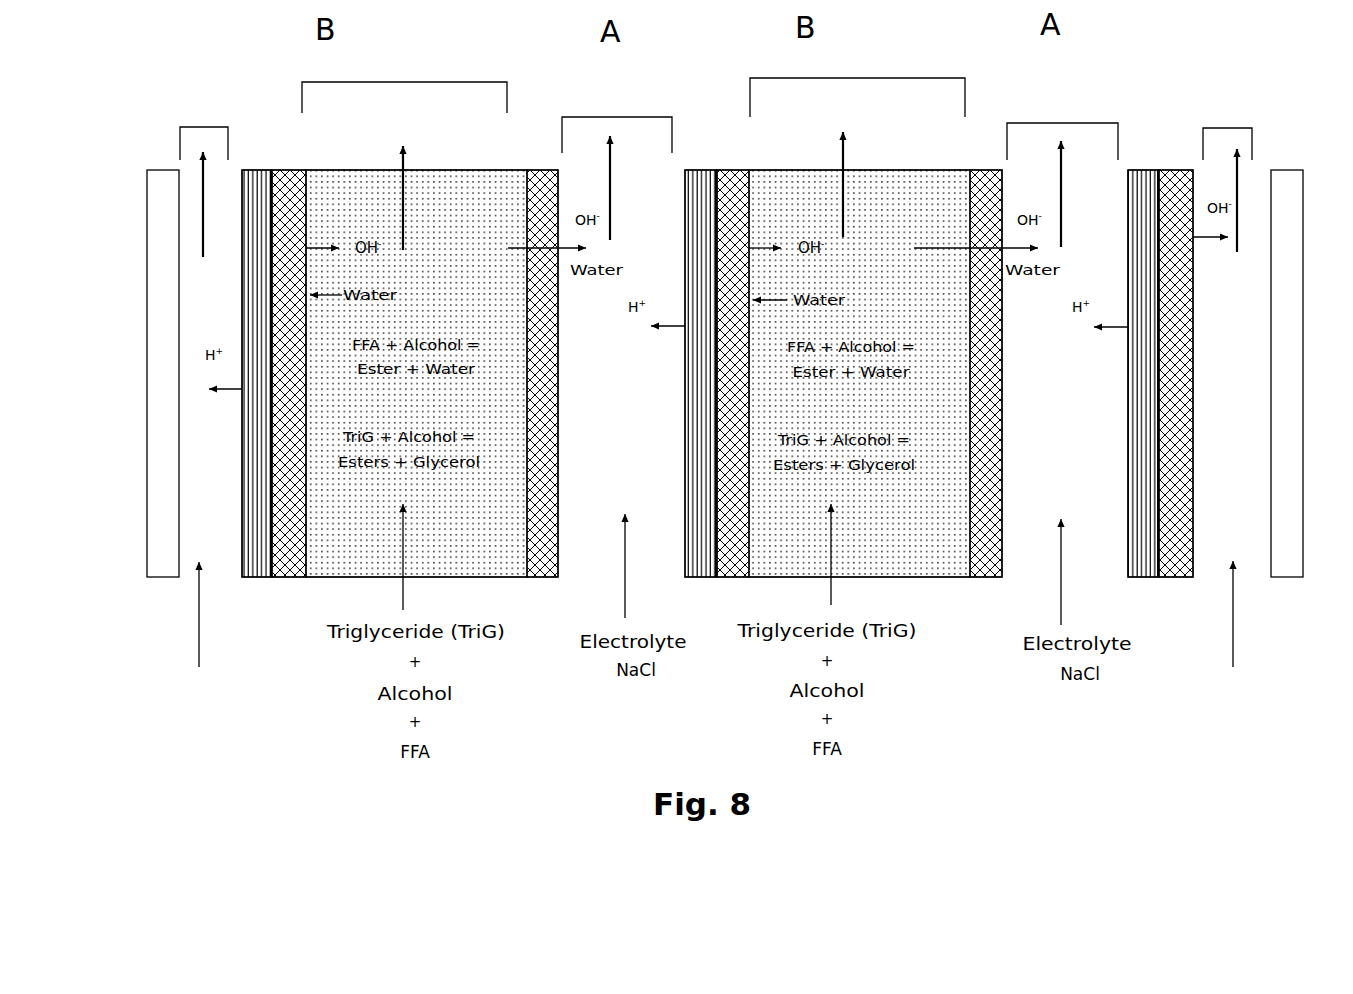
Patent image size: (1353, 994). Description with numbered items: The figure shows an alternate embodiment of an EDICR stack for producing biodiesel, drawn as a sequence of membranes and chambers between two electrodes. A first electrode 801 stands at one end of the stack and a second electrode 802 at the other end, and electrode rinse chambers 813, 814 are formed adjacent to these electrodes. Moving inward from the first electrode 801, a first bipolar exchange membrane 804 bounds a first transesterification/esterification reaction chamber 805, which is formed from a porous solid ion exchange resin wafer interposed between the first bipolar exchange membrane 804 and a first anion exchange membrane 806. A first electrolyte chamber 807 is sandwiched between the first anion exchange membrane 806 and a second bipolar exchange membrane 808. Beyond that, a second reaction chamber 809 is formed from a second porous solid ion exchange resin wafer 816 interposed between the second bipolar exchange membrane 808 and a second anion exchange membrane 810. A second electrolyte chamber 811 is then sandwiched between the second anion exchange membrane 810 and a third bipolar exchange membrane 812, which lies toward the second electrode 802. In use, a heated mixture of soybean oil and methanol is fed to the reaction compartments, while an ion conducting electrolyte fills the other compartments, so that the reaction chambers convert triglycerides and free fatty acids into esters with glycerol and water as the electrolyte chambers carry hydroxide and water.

The cathode electrode 801 is at (145, 152).
The anode electrode 802 is at (1282, 168).
The first bipolar exchange membrane 804 is at (272, 168).
The first transesterification/esterification reaction chamber 805 is at (396, 82).
The first anion exchange membrane 806 is at (537, 168).
The first electrolyte chamber 807 is at (623, 118).
The second bipolar exchange membrane 808 is at (717, 168).
The second reaction chamber 809 is at (867, 78).
The second anion exchange membrane 810 is at (988, 167).
The second electrolyte chamber 811 is at (1057, 123).
The third bipolar exchange membrane 812 is at (1148, 167).
The electrode rinse chamber 813 is at (198, 127).
The electrode rinse chamber 814 is at (1223, 128).
The second porous solid ion exchange resin wafer 816 is at (362, 527).